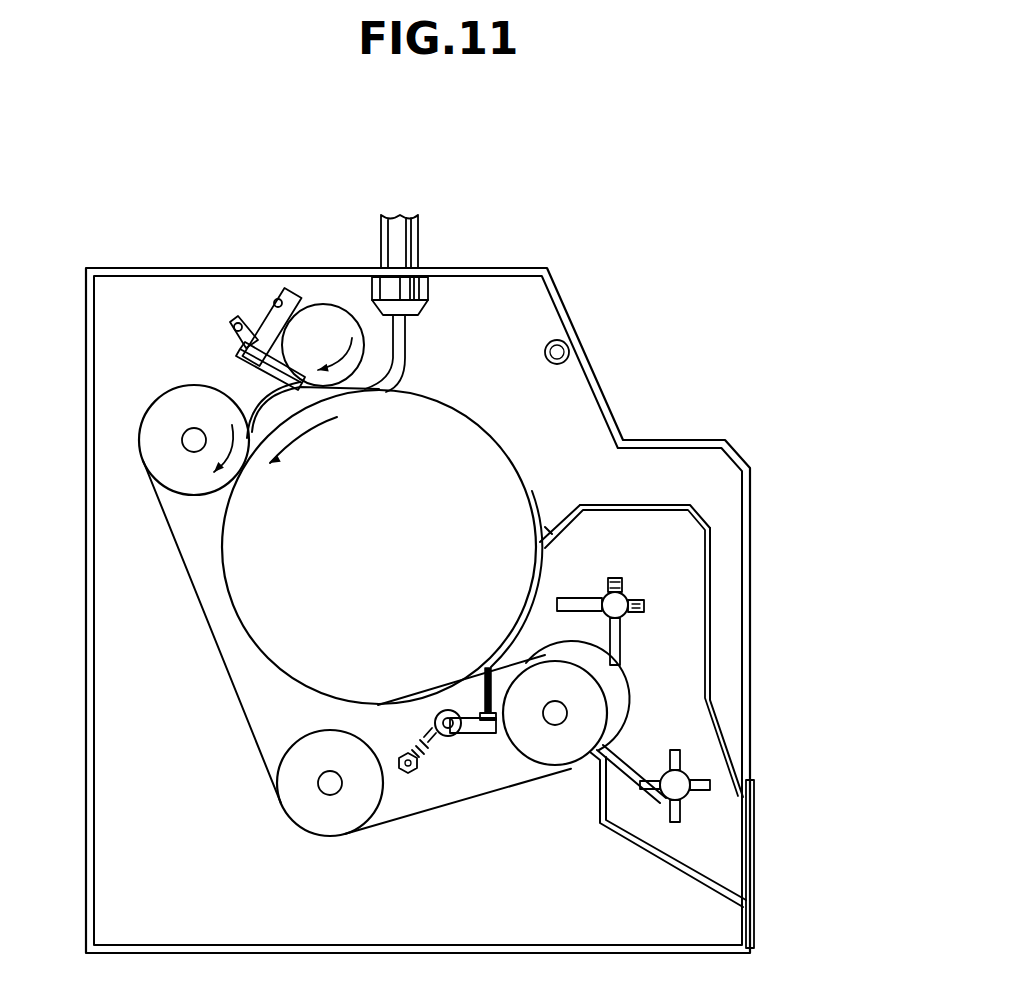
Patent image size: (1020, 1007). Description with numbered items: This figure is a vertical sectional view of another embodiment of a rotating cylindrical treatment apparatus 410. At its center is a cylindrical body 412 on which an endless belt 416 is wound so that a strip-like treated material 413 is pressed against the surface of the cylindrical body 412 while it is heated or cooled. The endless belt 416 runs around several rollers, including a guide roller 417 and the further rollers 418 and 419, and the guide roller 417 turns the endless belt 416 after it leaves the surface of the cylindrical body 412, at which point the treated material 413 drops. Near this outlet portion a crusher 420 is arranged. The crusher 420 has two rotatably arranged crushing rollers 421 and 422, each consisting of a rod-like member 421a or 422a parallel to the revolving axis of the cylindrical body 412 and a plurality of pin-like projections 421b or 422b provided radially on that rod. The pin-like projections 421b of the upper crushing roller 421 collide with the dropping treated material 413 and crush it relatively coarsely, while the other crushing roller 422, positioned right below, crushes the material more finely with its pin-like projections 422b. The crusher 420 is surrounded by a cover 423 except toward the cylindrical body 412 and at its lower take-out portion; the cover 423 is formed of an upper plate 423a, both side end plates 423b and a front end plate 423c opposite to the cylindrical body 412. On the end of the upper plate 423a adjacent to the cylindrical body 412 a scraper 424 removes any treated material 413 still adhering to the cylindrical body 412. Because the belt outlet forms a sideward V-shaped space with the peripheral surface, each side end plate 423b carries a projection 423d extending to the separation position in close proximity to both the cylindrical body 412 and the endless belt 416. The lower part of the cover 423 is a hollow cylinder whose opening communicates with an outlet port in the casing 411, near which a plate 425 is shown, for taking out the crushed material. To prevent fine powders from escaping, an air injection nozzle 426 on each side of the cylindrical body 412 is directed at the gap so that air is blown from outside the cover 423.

The rotating cylindrical treatment apparatus 410 is at (675, 243).
The casing 411 is at (503, 270).
The cylindrical body 412 is at (505, 457).
The treated material 413 is at (405, 350).
The endless belt 416 is at (172, 535).
The guide roller 417 is at (567, 752).
The roller 418 is at (290, 770).
The roller 419 is at (175, 395).
The crusher 420 is at (667, 630).
The crushing roller 421 is at (628, 585).
The rod-like member 421a is at (620, 612).
The pin-like projections 421b is at (578, 598).
The crushing roller 422 is at (690, 805).
The rod-like member 422a is at (662, 807).
The pin-like projections 422b is at (685, 733).
The cover 423 is at (672, 502).
The upper plate 423a is at (612, 503).
The side end plates 423b is at (620, 547).
The front end plate 423c is at (705, 620).
The projection 423d is at (493, 662).
The scraper 424 is at (538, 533).
The plate 425 is at (752, 882).
The air injection nozzle 426 is at (486, 668).